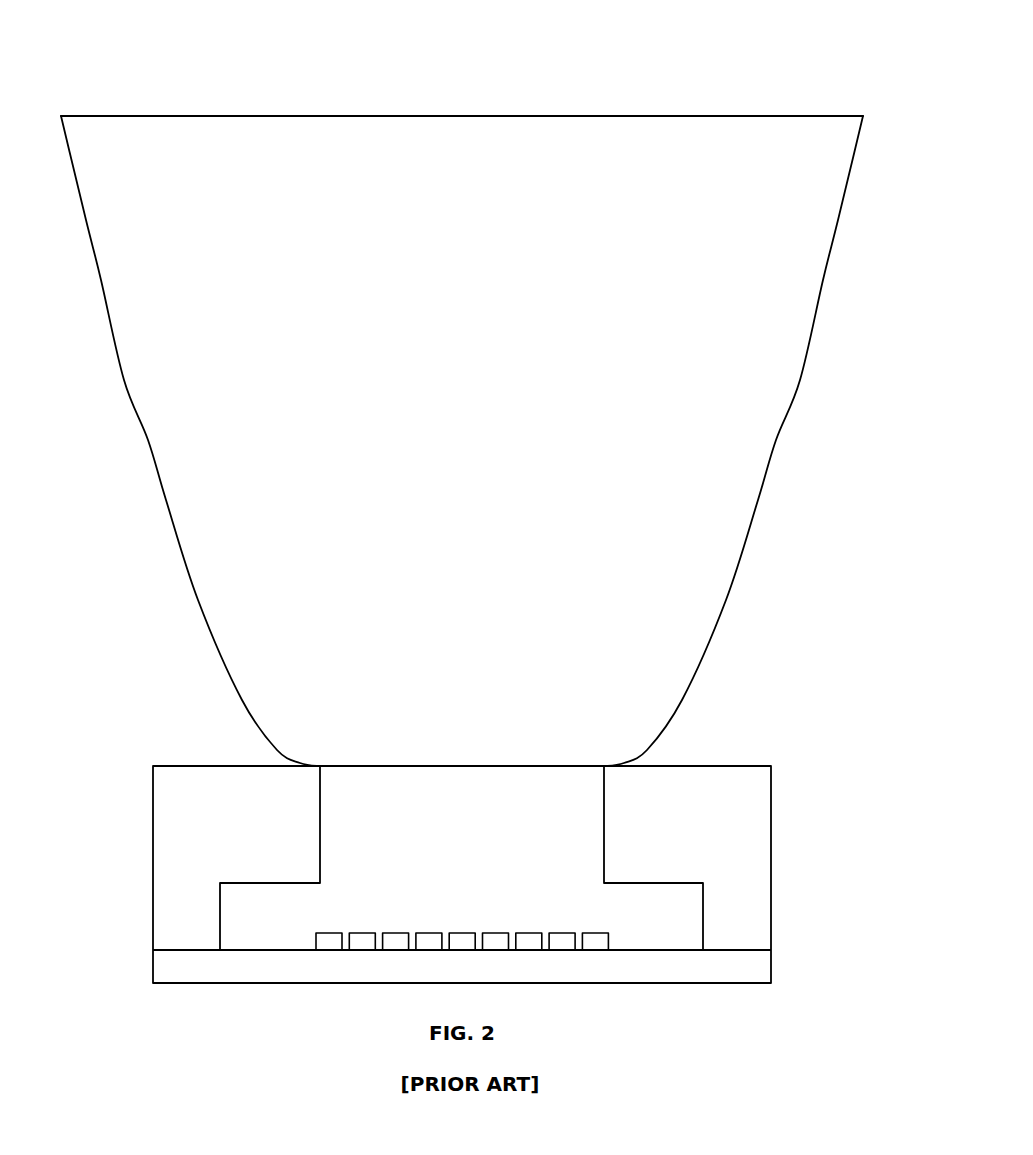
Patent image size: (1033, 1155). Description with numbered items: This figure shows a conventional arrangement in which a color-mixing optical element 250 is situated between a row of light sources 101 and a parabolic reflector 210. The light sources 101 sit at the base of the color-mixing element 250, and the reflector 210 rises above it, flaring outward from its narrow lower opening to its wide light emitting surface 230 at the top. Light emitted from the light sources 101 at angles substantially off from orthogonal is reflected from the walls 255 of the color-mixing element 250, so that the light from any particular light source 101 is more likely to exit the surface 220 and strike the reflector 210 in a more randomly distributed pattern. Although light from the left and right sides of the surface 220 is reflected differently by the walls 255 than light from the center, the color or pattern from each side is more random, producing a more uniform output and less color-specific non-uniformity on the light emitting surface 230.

The light sources 101 is at (395, 941).
The parabolic reflector 210 is at (752, 517).
The surface 220 is at (528, 766).
The light emitting surface 230 is at (563, 116).
The color-mixing optical element 250 is at (561, 883).
The walls 255 is at (320, 800).